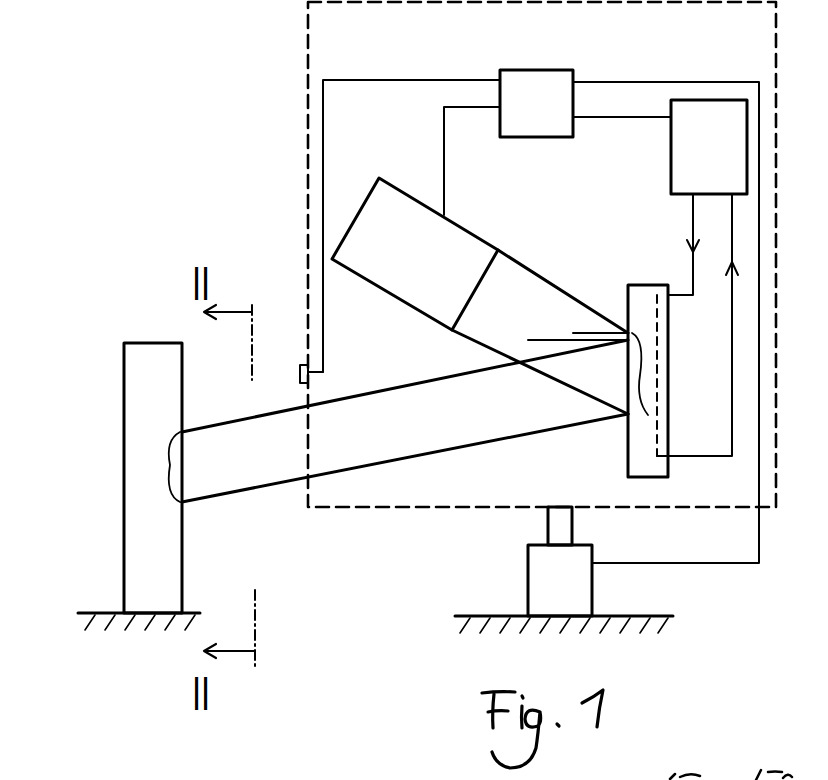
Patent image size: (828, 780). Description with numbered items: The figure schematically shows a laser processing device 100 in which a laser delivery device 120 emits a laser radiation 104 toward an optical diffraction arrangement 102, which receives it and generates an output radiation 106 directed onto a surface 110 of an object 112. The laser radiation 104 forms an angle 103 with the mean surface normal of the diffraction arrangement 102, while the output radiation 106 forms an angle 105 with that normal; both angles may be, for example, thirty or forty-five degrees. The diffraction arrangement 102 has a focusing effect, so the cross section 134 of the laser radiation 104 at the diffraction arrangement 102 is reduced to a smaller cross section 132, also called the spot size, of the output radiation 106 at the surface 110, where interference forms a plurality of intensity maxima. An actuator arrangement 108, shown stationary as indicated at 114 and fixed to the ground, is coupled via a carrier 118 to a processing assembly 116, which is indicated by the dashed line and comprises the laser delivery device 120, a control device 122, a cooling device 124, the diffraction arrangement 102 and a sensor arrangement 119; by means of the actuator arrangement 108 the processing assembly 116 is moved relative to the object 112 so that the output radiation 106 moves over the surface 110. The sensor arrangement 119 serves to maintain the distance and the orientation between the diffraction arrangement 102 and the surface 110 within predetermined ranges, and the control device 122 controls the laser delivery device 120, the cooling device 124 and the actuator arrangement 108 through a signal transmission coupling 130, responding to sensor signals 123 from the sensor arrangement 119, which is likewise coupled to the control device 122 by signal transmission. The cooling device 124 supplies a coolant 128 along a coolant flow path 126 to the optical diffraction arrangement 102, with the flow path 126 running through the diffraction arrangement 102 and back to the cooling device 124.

The laser processing device 100 is at (212, 68).
The optical diffraction arrangement 102 is at (640, 285).
The angle 103 is at (580, 330).
The laser radiation 104 is at (553, 285).
The angle 105 is at (540, 344).
The output radiation 106 is at (523, 437).
The actuator arrangement 108 is at (528, 585).
The surface 110 is at (183, 548).
The object 112 is at (148, 355).
The stationary 114 is at (92, 612).
The processing assembly 116 is at (308, 137).
The carrier 118 is at (548, 525).
The sensor arrangement 119 is at (303, 365).
The laser delivery device 120 is at (396, 178).
The control device 122 is at (530, 70).
The sensor signals 123 is at (322, 205).
The cooling device 124 is at (671, 150).
The coolant flow path 126 is at (660, 372).
The coolant 128 is at (693, 297).
The signal transmission coupling 130 is at (322, 170).
The cross section 132 is at (162, 465).
The cross section 134 is at (648, 400).